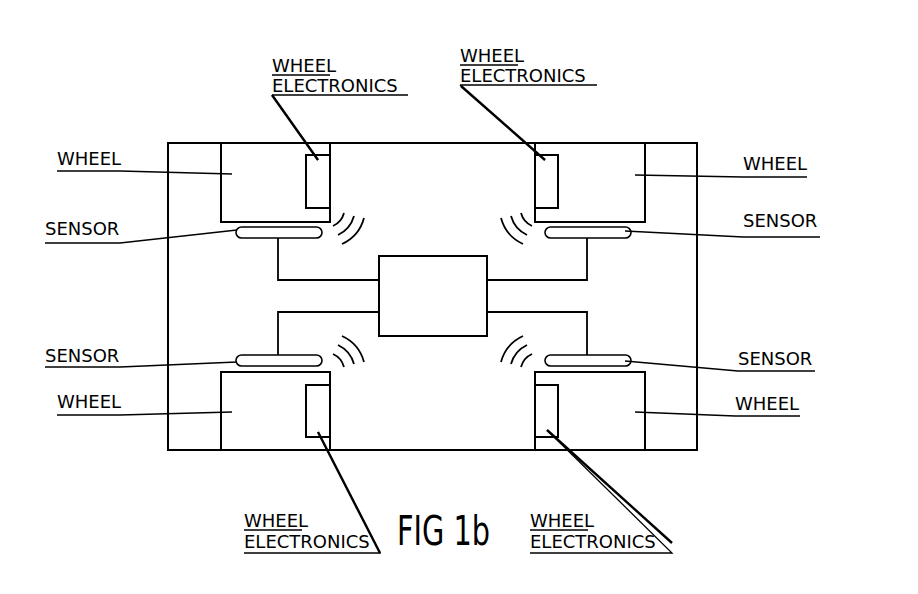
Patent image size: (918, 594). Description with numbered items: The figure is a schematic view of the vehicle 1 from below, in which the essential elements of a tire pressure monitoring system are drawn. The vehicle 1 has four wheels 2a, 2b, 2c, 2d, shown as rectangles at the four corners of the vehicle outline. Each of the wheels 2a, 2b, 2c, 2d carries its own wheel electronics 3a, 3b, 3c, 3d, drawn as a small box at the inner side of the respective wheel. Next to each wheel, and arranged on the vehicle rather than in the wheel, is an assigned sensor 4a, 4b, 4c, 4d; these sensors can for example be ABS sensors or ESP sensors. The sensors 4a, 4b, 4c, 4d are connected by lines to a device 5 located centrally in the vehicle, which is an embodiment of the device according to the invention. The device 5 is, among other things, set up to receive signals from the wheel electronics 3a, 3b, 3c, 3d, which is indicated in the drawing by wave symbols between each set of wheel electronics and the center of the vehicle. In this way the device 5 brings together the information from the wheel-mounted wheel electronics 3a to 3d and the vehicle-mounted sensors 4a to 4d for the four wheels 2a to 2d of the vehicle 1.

The vehicle 1 is at (720, 113).
The wheel 2a is at (633, 158).
The wheel 2b is at (630, 437).
The wheel 2c is at (232, 158).
The wheel 2d is at (233, 437).
The wheel electronics 3a is at (547, 181).
The wheel electronics 3b is at (545, 410).
The wheel electronics 3c is at (318, 181).
The wheel electronics 3d is at (318, 410).
The sensor 4a is at (628, 235).
The sensor 4b is at (628, 358).
The sensor 4c is at (238, 235).
The sensor 4d is at (238, 358).
The device 5 is at (432, 297).